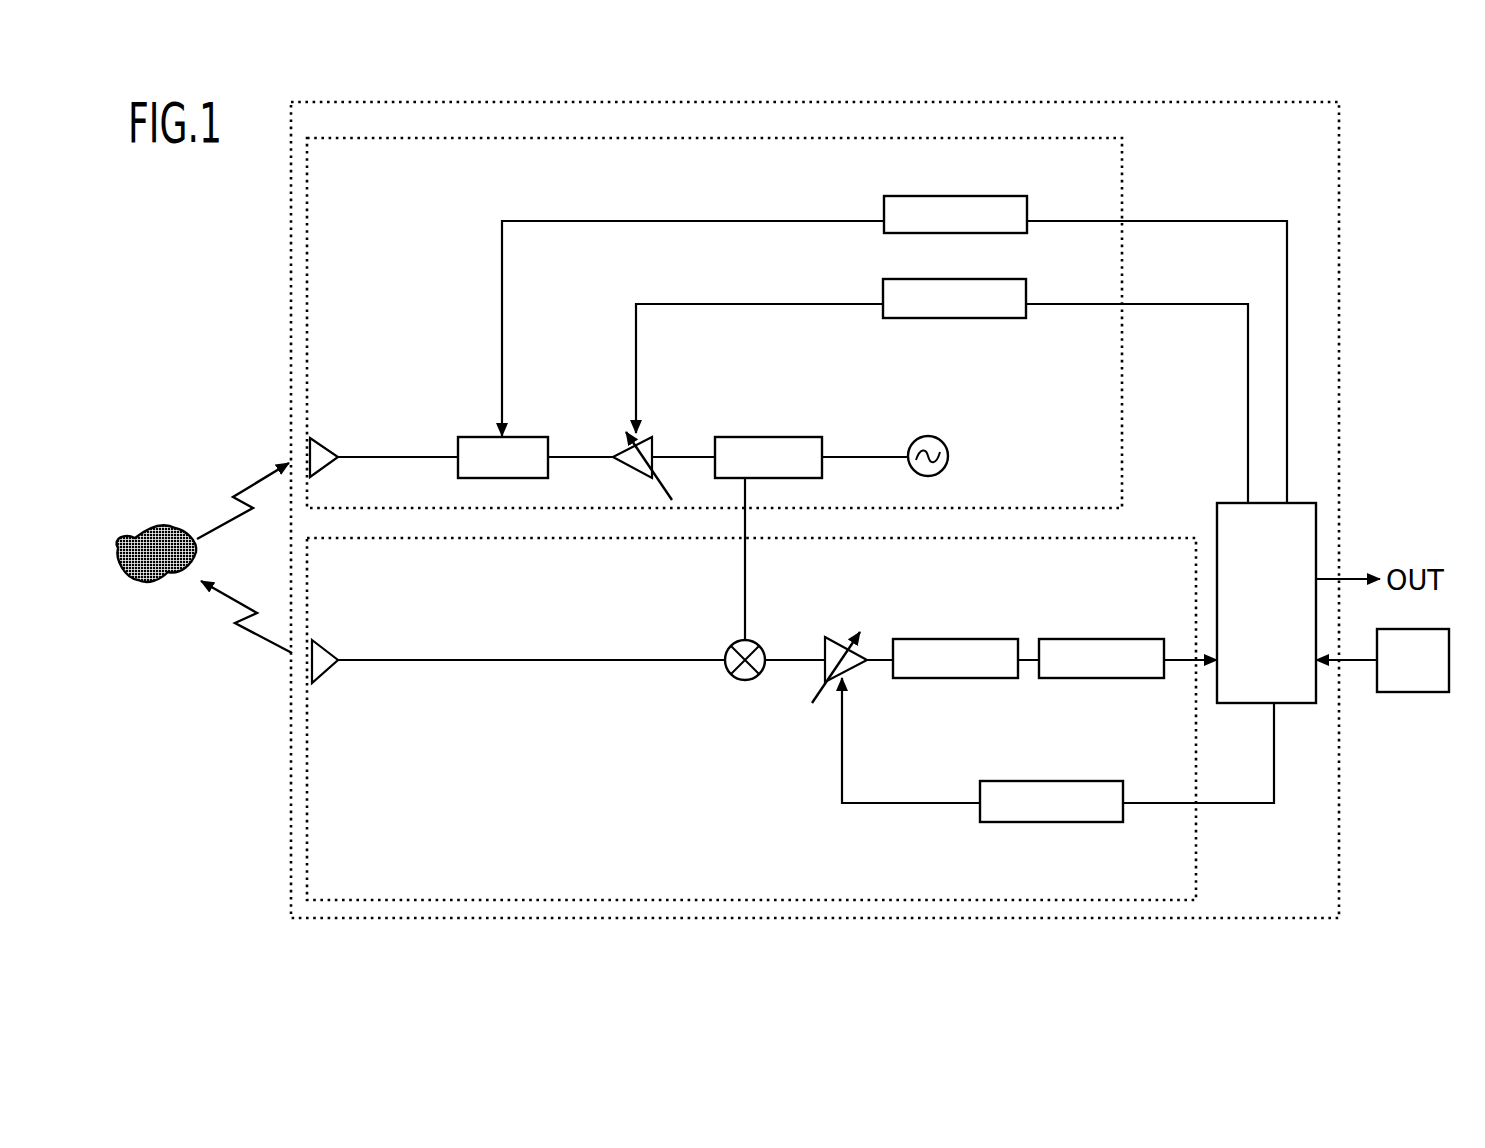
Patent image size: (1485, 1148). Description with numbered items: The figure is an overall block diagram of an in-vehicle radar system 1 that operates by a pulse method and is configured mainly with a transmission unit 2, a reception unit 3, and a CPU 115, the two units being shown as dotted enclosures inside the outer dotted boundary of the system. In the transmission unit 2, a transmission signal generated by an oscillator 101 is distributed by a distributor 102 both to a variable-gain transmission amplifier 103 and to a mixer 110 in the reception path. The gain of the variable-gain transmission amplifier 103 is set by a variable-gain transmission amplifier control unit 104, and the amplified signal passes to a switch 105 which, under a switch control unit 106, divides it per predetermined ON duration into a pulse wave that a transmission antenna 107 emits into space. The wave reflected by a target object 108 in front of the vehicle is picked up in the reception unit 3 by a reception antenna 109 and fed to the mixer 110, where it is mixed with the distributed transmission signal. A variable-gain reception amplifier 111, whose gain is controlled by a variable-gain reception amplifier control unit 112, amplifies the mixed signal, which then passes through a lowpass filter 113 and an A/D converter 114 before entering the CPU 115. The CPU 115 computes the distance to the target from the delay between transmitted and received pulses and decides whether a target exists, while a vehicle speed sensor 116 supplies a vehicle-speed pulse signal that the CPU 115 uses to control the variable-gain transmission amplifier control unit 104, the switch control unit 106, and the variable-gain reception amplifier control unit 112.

The in-vehicle radar system 1 is at (1339, 228).
The transmission unit 2 is at (1122, 175).
The reception unit 3 is at (1196, 836).
The oscillator 101 is at (928, 436).
The distributor 102 is at (782, 437).
The variable-gain transmission amplifier 103 is at (654, 433).
The variable-gain transmission amplifier control unit 104 is at (897, 279).
The switch 105 is at (535, 437).
The switch control unit 106 is at (922, 196).
The transmission antenna 107 is at (312, 437).
The target object 108 is at (158, 525).
The reception antenna 109 is at (320, 640).
The mixer 110 is at (728, 648).
The variable-gain reception amplifier 111 is at (828, 636).
The variable-gain reception amplifier control unit 112 is at (1065, 822).
The lowpass filter 113 is at (995, 678).
The A/D converter 114 is at (1118, 678).
The CPU 115 is at (1316, 548).
The vehicle speed sensor 116 is at (1413, 692).